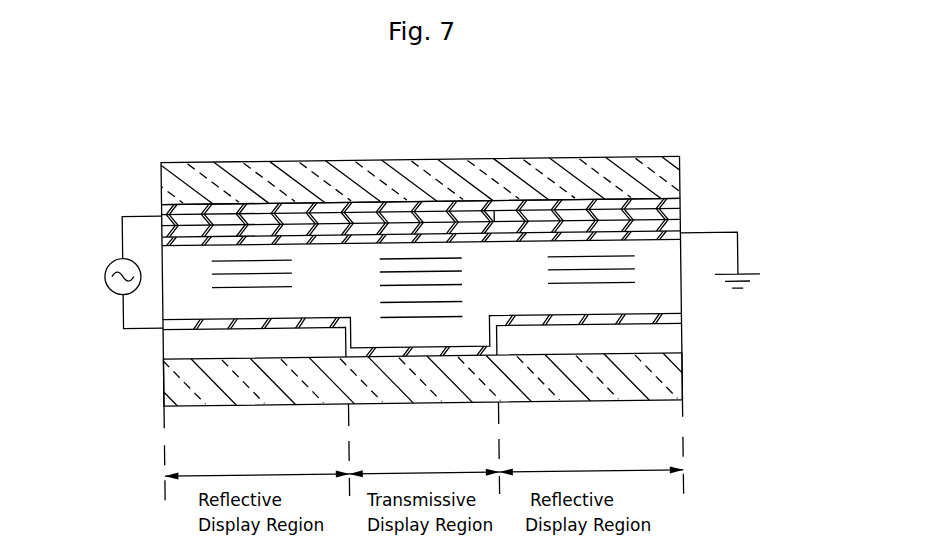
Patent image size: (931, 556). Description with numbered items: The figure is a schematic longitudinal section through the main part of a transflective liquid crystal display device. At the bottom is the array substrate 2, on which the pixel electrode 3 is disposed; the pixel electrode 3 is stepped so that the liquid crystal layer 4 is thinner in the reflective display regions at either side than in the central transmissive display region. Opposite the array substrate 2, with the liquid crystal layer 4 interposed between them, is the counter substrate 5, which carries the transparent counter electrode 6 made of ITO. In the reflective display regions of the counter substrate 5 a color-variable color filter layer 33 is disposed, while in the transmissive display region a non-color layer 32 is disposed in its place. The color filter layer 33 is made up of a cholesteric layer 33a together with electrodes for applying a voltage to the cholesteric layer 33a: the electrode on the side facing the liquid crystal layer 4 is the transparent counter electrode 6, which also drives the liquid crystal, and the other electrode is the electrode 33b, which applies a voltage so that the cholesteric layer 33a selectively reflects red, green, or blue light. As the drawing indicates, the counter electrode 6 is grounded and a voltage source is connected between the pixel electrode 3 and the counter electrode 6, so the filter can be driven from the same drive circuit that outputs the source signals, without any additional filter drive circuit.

The array substrate 2 is at (80, 332).
The pixel electrode 3 is at (681, 316).
The liquid crystal layer 4 is at (80, 250).
The counter substrate 5 is at (80, 168).
The counter electrode 6 is at (681, 233).
The non-color layer 32 is at (458, 214).
The color filter layer 33 is at (768, 150).
The cholesteric layer 33a is at (681, 217).
The electrode 33b is at (681, 200).